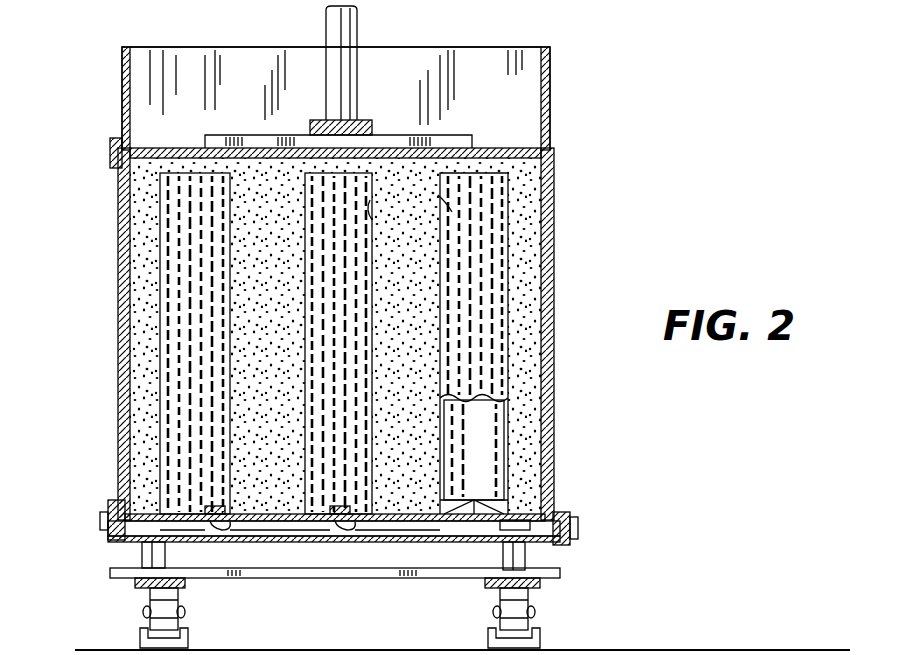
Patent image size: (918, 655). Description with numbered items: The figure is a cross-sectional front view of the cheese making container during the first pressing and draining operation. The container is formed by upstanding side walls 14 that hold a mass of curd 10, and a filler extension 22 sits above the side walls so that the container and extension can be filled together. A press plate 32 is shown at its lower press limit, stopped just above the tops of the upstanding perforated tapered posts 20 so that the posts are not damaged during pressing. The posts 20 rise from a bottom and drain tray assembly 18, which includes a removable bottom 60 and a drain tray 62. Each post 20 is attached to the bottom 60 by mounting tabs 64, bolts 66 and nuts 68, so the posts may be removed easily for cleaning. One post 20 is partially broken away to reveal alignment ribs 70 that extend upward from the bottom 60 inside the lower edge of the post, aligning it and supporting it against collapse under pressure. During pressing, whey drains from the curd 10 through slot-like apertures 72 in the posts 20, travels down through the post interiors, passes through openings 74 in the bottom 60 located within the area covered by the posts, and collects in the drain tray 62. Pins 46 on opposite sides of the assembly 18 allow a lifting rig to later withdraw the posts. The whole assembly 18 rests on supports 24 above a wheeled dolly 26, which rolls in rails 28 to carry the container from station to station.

The curd 10 is at (410, 280).
The side walls 14 is at (118, 264).
The bottom and drain tray assembly 18 is at (562, 498).
The upstanding perforated tapered posts 20 is at (230, 282).
The filler extension 22 is at (553, 100).
The supports 24 is at (142, 550).
The wheeled dolly 26 is at (110, 572).
The rails 28 is at (140, 632).
The plate 32 is at (498, 148).
The pins 46 is at (100, 524).
The removable bottom 60 is at (245, 516).
The drain tray 62 is at (258, 538).
The mounting tabs 64 is at (240, 512).
The bolts 66 is at (205, 508).
The nuts 68 is at (340, 515).
The alignment ribs 70 is at (474, 456).
The slot-like apertures 72 is at (440, 200).
The openings 74 is at (474, 495).